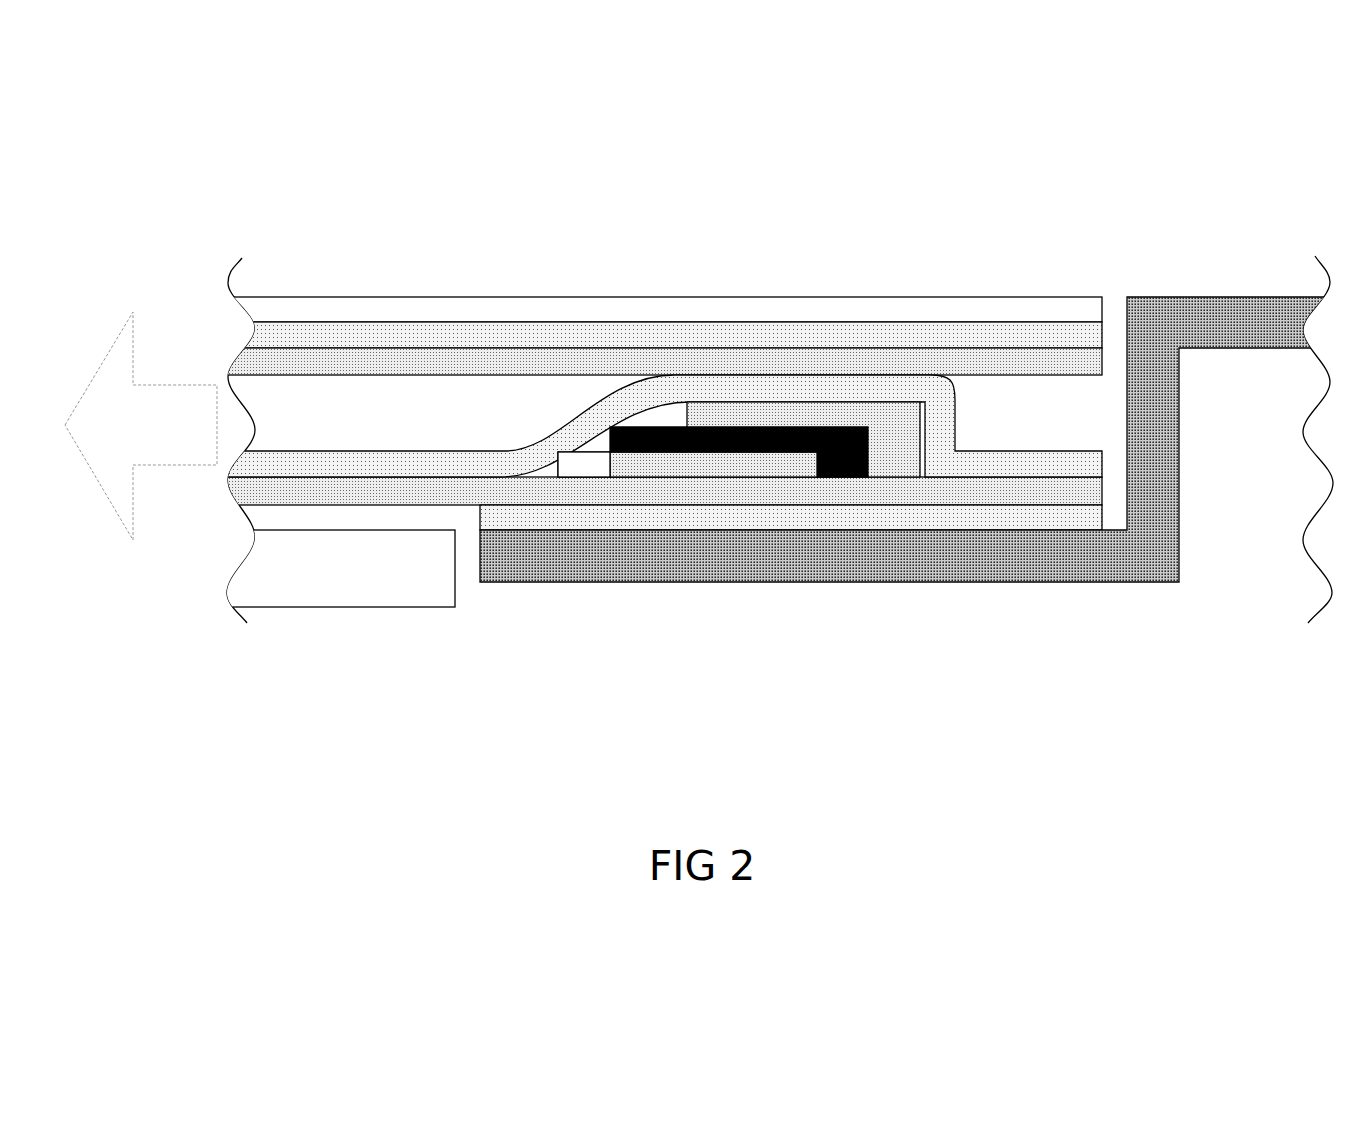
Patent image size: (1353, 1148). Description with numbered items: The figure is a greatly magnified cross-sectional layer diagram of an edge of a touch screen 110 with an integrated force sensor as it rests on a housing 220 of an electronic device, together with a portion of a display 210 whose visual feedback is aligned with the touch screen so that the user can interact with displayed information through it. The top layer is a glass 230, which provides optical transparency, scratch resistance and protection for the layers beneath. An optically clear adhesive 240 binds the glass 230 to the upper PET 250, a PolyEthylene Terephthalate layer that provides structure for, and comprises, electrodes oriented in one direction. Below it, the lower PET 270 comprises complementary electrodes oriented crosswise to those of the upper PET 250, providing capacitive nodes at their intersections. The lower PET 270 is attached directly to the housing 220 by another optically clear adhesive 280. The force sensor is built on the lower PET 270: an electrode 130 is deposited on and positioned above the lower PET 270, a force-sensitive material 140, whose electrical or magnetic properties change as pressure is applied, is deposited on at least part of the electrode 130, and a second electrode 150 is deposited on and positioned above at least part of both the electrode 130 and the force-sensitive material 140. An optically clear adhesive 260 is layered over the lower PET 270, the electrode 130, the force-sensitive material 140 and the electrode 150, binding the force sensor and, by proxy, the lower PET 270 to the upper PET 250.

The touch screen 110 is at (190, 205).
The electrode 130 is at (584, 464).
The force-sensitive material 140 is at (739, 452).
The electrode 150 is at (739, 439).
The display 210 is at (440, 600).
The housing 220 is at (1175, 570).
The glass 230 is at (1082, 305).
The optically clear adhesive 240 is at (1090, 340).
The upper PET 250 is at (1058, 365).
The optically clear adhesive 260 is at (955, 404).
The lower PET 270 is at (1090, 492).
The optically clear adhesive 280 is at (1003, 523).